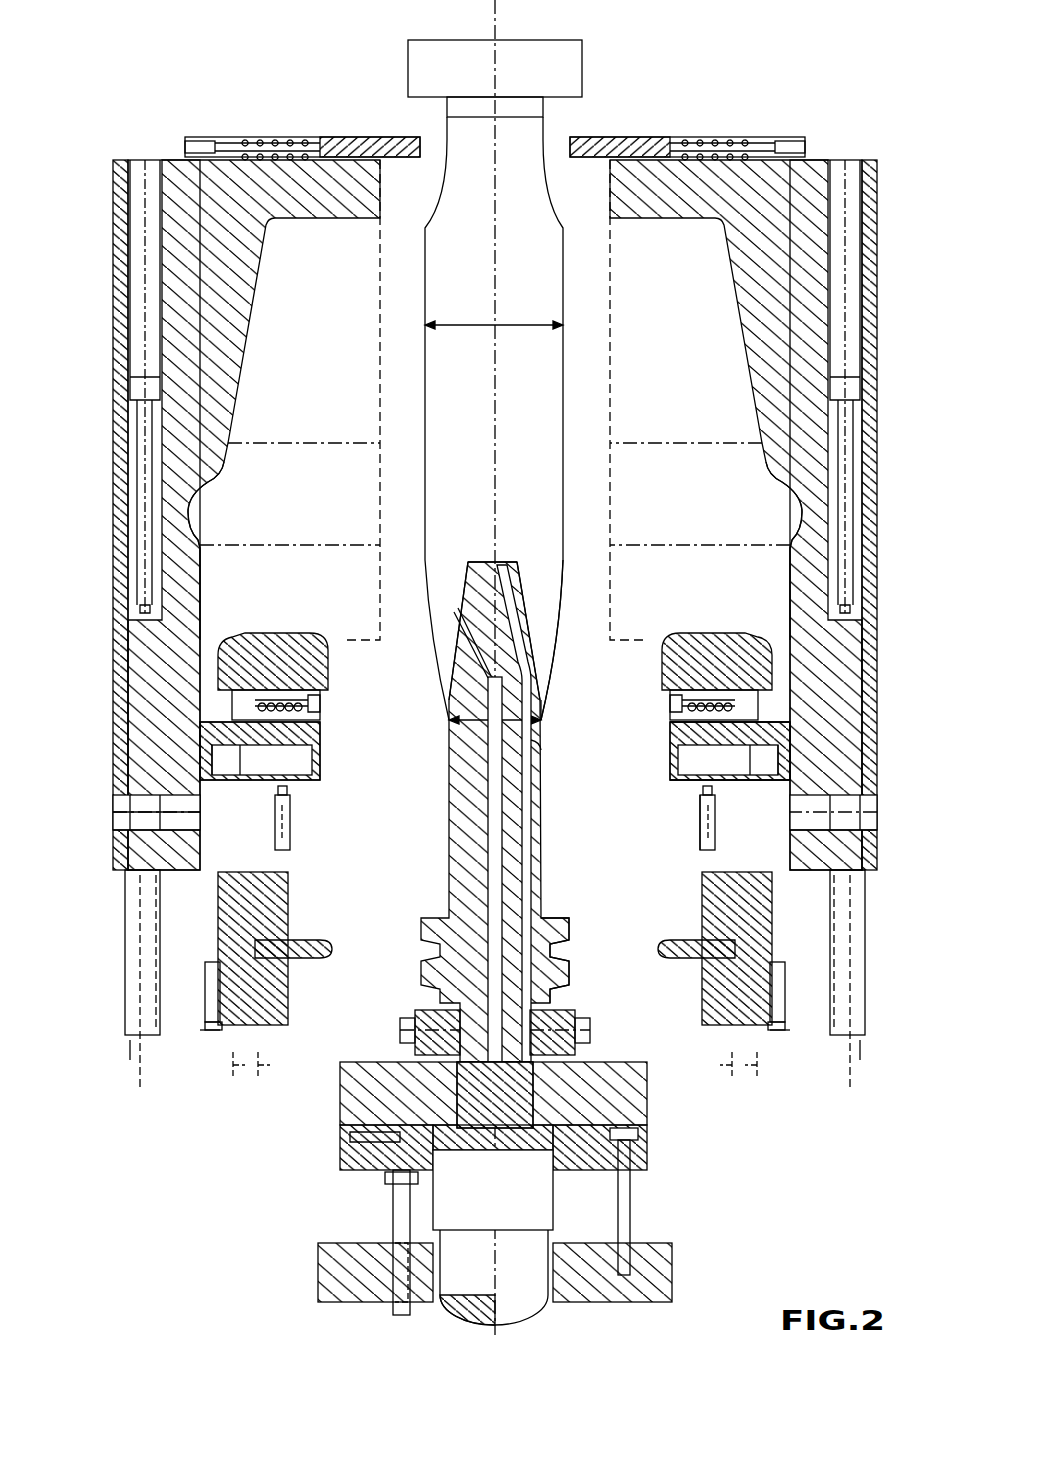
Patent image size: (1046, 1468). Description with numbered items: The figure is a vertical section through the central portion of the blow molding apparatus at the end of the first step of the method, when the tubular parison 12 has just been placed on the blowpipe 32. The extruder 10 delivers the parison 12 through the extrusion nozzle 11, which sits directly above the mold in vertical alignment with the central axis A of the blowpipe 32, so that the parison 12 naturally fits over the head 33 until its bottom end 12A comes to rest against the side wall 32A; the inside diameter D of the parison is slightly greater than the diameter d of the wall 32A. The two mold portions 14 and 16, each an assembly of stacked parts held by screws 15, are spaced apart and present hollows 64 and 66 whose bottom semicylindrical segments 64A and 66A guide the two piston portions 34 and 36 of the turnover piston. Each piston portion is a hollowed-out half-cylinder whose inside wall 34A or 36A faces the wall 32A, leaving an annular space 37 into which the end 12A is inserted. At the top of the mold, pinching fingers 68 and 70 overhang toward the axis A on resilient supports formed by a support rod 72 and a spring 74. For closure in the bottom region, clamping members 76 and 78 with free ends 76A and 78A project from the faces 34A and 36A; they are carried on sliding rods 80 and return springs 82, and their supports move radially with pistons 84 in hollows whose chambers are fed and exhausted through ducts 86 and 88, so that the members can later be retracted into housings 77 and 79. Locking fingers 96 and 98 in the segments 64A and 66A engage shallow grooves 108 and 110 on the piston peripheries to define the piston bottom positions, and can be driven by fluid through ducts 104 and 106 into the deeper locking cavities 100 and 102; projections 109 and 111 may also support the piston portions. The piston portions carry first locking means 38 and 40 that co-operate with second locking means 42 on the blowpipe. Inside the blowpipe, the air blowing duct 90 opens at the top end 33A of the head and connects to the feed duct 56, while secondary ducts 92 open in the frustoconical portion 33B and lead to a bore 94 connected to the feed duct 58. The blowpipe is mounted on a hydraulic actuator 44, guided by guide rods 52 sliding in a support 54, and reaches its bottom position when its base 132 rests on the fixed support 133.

The extruder 10 is at (466, 42).
The central axis A is at (515, 28).
The extrusion nozzle 11 is at (545, 107).
The tubular parison 12 is at (556, 193).
The bottom end of the parison 12A is at (541, 700).
The inside diameter of the parison D is at (494, 308).
The diameter of the blowpipe wall d is at (473, 711).
The mold portion 14 is at (820, 160).
The screws 15 is at (848, 450).
The mold portion 16 is at (175, 160).
The hollow 66 is at (324, 370).
The semicylindrical segment 66A is at (222, 612).
The hollow 64 is at (706, 370).
The semicylindrical segment 64A is at (792, 600).
The pinching finger 70 is at (345, 137).
The pinching finger 68 is at (640, 137).
The support rod 72 is at (760, 137).
The spring 74 is at (710, 137).
The piston portion 36 is at (295, 633).
The inside wall of piston portion 36A is at (368, 660).
The piston portion 34 is at (715, 633).
The inside wall of piston portion 34A is at (648, 634).
The clamping member 78 is at (320, 712).
The free end of clamping member 78A is at (320, 690).
The clamping member 76 is at (670, 712).
The free end of clamping member 76A is at (670, 690).
The housing 79 is at (250, 700).
The return spring 82 is at (700, 650).
The housing 77 is at (745, 700).
The sliding rod 80 is at (670, 745).
The piston 84 is at (695, 800).
The duct 86 is at (240, 1070).
The duct 88 is at (270, 1068).
The locking finger 98 is at (160, 798).
The locking finger 96 is at (845, 798).
The groove 110 is at (160, 845).
The groove 108 is at (840, 845).
The first locking means 40 is at (325, 940).
The first locking means 38 is at (668, 940).
The locking cavity 102 is at (210, 1000).
The locking cavity 100 is at (780, 1000).
The fluid duct 104 is at (500, 995).
The fluid duct 106 is at (128, 1052).
The left foot 111 is at (200, 1038).
The projection 109 is at (788, 1038).
The blowpipe 32 is at (405, 780).
The side wall of the blowpipe 32A is at (531, 742).
The head of the blowpipe 33 is at (510, 560).
The top end of the head 33A is at (470, 562).
The frustoconical portion of the head 33B is at (470, 590).
The annular space 37 is at (603, 612).
The air blowing duct 90 is at (515, 585).
The secondary duct 92 is at (460, 640).
The bore 94 is at (490, 862).
The second locking means 42 is at (569, 950).
The air feed duct 58 is at (402, 1030).
The air feed duct 56 is at (588, 1030).
The base of the blowpipe 132 is at (640, 1070).
The fixed support 133 is at (648, 1150).
The hydraulic actuator 44 is at (490, 1207).
The guide rod 52 is at (393, 1215).
The support 54 is at (660, 1280).